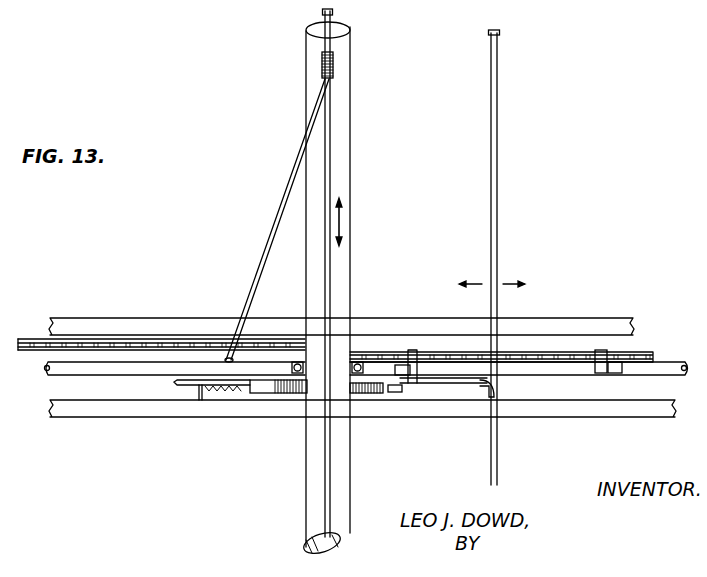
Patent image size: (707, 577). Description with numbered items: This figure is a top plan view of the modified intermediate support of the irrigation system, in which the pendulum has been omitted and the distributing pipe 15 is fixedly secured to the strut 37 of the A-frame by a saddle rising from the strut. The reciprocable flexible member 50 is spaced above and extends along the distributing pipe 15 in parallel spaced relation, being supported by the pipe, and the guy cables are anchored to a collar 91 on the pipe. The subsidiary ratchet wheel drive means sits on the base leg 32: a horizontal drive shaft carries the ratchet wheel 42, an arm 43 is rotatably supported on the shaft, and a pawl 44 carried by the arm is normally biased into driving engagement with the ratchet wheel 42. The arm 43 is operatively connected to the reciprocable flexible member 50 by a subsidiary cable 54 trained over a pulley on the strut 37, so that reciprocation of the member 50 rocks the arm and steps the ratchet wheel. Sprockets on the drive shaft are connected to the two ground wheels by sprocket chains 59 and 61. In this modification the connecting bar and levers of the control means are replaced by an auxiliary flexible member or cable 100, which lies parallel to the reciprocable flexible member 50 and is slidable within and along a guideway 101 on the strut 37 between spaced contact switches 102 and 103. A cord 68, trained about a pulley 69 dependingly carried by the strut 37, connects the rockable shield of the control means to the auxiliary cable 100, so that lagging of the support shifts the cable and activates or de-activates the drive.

The distributing pipe 15 is at (352, 178).
The reciprocable flexible member 50 is at (330, 119).
The subsidiary cable 54 is at (253, 301).
The sprocket chain 59 is at (163, 341).
The strut 37 is at (140, 371).
The base leg 32 is at (567, 416).
The pawl 44 is at (245, 393).
The arm 43 is at (252, 388).
The ratchet wheel 42 is at (370, 396).
The pulley 69 is at (408, 398).
The cord 68 is at (440, 398).
The collar 91 is at (363, 351).
The contact switch 102 is at (412, 352).
The guideway 101 is at (545, 370).
The sprocket chain 61 is at (513, 352).
The contact switch 103 is at (615, 350).
The auxiliary flexible member 100 is at (498, 197).